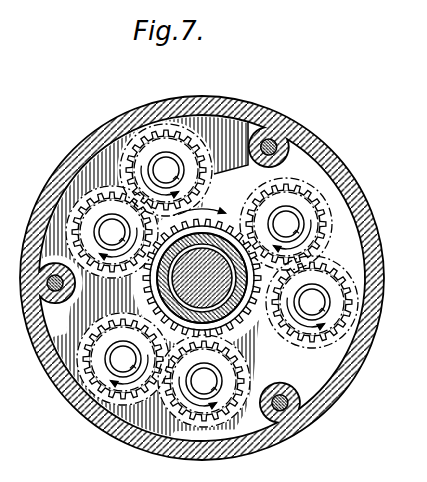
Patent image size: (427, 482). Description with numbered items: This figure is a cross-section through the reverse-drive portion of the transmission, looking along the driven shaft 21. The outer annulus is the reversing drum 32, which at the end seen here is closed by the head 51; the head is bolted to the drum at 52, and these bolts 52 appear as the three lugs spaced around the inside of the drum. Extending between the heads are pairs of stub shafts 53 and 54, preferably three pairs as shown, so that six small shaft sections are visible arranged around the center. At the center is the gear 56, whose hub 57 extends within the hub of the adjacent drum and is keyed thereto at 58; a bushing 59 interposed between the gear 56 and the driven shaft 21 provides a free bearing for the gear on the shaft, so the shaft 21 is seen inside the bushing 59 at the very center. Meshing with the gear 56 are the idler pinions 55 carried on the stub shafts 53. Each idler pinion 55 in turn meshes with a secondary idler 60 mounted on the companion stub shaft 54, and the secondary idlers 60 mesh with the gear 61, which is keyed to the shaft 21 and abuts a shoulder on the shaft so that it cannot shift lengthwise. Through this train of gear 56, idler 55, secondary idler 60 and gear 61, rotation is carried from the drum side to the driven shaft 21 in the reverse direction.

The driven shaft 21 is at (202, 278).
The reversing drum 32 is at (350, 201).
The head 51 is at (327, 365).
The bolts 52 is at (277, 134).
The stub shafts 53 is at (299, 224).
The stub shafts 54 is at (179, 165).
The idler pinions 55 is at (299, 181).
The gear 56 is at (244, 330).
The hub 57 is at (207, 323).
The key 58 is at (203, 228).
The bushing 59 is at (229, 263).
The secondary idler 60 is at (185, 152).
The gear 61 is at (230, 220).